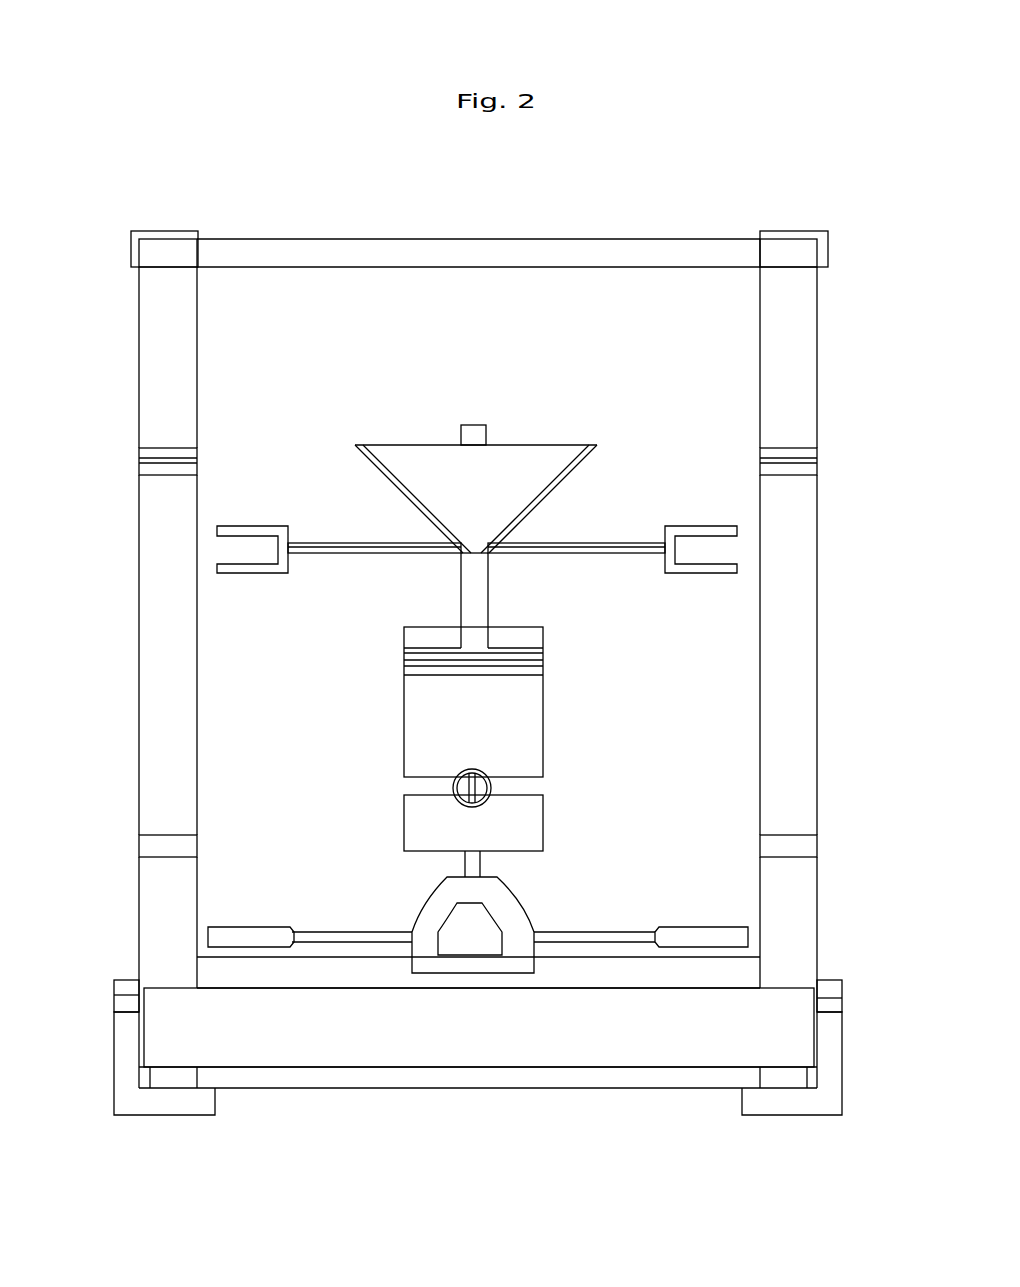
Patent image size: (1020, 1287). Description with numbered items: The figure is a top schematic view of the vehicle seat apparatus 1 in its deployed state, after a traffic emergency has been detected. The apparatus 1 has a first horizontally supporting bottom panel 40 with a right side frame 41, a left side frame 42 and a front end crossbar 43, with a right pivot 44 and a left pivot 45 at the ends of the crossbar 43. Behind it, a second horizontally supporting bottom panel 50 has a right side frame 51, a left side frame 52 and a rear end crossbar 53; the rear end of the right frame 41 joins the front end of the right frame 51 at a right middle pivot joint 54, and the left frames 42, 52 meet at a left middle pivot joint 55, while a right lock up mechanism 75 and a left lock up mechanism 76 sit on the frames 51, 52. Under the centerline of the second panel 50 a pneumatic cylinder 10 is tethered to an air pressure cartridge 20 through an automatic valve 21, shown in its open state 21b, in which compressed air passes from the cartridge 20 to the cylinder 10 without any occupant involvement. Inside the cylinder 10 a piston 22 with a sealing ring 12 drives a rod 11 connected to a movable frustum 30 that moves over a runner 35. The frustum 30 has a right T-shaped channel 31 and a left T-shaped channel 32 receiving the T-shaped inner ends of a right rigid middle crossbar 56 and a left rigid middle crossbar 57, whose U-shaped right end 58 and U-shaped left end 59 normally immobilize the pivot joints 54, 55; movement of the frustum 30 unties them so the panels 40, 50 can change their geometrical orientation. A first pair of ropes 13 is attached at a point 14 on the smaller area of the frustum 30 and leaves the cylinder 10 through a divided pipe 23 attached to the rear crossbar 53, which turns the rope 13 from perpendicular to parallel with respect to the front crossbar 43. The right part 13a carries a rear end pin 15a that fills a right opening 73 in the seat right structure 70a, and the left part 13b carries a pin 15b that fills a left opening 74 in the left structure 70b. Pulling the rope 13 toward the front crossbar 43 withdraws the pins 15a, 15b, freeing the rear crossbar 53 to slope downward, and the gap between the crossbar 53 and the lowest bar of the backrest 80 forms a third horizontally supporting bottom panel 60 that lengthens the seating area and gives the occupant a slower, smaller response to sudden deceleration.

The vehicle seat apparatus 1 is at (718, 199).
The pneumatic cylinder 10 is at (528, 718).
The rod 11 is at (466, 622).
The sealing ring 12 is at (410, 661).
The first pair of ropes 13 is at (470, 865).
The right part of rope 13a is at (590, 933).
The left part of rope 13b is at (331, 937).
The attachment point 14 is at (484, 556).
The right rear end pin 15a is at (681, 935).
The left rear end pin 15b is at (238, 935).
The air pressure cartridge 20 is at (528, 828).
The automatic valve 21 is at (492, 789).
The open state of automatic valve 21b is at (468, 790).
The piston 22 is at (523, 656).
The divided pipe 23 is at (513, 922).
The movable frustum 30 is at (513, 470).
The right T-shaped channel 31 is at (547, 495).
The left T-shaped channel 32 is at (392, 488).
The runner 35 is at (483, 424).
The first horizontally supporting bottom panel 40 is at (270, 337).
The right side frame 41 is at (800, 390).
The left side frame 42 is at (165, 398).
The front end crossbar 43 is at (418, 252).
The right pivot 44 is at (822, 236).
The left pivot 45 is at (133, 233).
The second horizontally supporting bottom panel 50 is at (273, 739).
The right side frame 51 is at (800, 762).
The left side frame 52 is at (165, 748).
The rear end crossbar 53 is at (390, 980).
The right middle pivot joint 54 is at (810, 460).
The left middle pivot joint 55 is at (165, 462).
The right rigid middle crossbar 56 is at (637, 556).
The left rigid middle crossbar 57 is at (390, 553).
The U-shaped right end 58 is at (690, 573).
The U-shaped left end 59 is at (247, 578).
The third horizontally supporting bottom panel 60 is at (312, 1034).
The seat right structure 70a is at (805, 1103).
The seat left structure 70b is at (155, 1105).
The right opening 73 is at (830, 1007).
The left opening 74 is at (128, 1000).
The right lock up mechanism 75 is at (805, 850).
The left lock up mechanism 76 is at (160, 847).
The backrest lowest bar 80 is at (440, 1080).